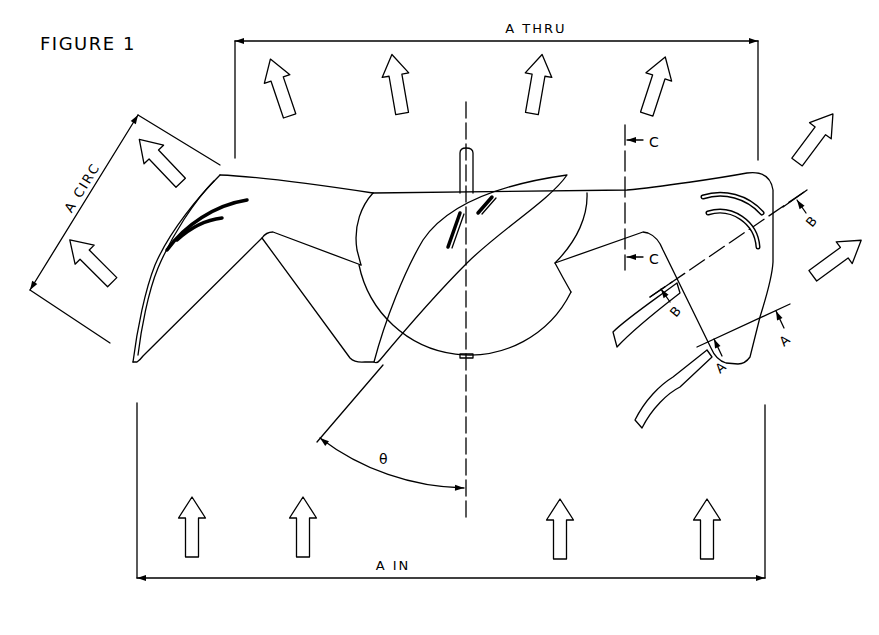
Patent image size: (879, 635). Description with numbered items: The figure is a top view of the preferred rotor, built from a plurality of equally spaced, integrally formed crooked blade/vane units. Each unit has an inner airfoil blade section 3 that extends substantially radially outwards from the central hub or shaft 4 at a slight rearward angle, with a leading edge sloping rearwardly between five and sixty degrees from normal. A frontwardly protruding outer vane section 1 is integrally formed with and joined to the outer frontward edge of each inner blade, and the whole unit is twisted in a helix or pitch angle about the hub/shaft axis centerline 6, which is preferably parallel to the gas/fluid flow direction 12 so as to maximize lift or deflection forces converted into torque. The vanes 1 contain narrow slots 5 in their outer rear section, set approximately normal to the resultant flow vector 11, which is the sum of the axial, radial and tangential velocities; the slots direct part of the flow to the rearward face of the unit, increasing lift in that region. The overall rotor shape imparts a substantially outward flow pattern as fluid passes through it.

The outer vane section 1 is at (133, 328).
The inner blade section 3 is at (338, 200).
The central hub or shaft 4 is at (447, 343).
The slots 5 is at (732, 195).
The hub/shaft axis centerline 6 is at (466, 307).
The resultant flow vector 11 is at (662, 355).
The gas/fluid flow direction 12 is at (450, 528).